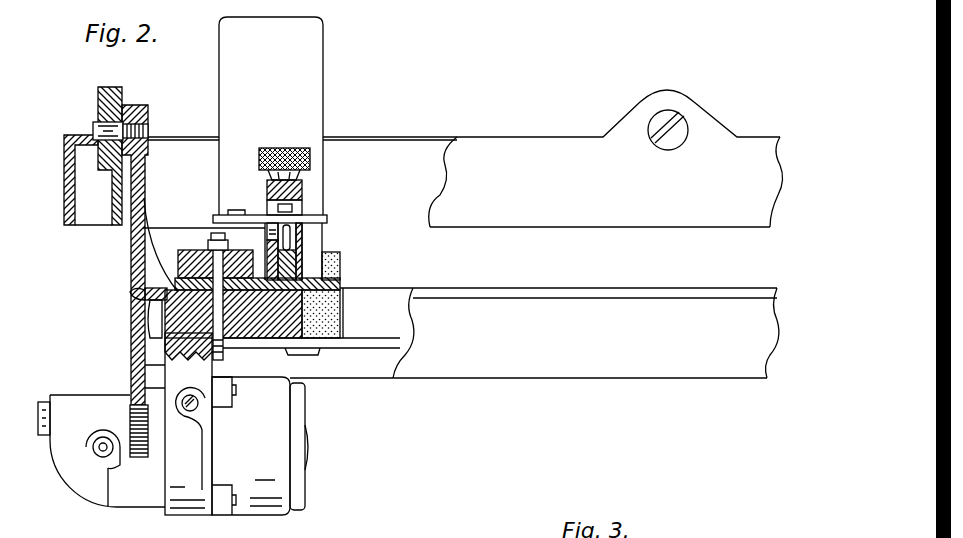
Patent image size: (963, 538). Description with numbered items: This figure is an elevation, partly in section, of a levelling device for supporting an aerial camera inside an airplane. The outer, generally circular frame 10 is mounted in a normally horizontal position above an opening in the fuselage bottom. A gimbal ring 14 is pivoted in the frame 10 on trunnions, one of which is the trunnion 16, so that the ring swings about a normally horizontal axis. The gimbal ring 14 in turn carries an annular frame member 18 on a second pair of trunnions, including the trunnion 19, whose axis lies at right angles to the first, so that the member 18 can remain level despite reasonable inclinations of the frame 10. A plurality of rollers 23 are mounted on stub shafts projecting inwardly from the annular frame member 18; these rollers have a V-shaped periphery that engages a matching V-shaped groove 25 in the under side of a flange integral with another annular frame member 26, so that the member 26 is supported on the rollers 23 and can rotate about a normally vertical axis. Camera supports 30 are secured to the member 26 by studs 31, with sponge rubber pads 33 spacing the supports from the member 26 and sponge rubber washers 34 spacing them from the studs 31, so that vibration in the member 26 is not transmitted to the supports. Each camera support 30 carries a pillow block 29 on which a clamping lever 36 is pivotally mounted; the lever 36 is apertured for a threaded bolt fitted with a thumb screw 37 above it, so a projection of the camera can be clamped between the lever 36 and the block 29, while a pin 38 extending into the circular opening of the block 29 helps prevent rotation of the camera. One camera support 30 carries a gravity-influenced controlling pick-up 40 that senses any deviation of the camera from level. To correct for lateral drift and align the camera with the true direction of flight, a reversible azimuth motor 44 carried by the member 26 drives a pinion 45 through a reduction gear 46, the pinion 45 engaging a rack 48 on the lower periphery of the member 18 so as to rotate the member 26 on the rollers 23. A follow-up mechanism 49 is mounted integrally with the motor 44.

The frame 10 is at (64, 150).
The gimbal ring 14 is at (418, 213).
The trunnion 16 is at (690, 128).
The annular frame member 18 is at (500, 362).
The trunnion 19 is at (93, 130).
The rollers 23 is at (145, 333).
The V-shaped groove 25 is at (140, 290).
The annular frame member 26 is at (348, 346).
The pillow block 29 is at (303, 252).
The camera supports 30 is at (343, 289).
The studs 31 is at (212, 238).
The sponge rubber pads 33 is at (327, 318).
The sponge rubber washers 34 is at (178, 264).
The clamping lever 36 is at (267, 188).
The thumb screw 37 is at (283, 158).
The pin 38 is at (268, 236).
The controlling pick-up 40 is at (305, 84).
The motor 44 is at (260, 446).
The pinion 45 is at (130, 386).
The reduction gear 46 is at (193, 503).
The rack 48 is at (132, 366).
The follow-up mechanism 49 is at (75, 478).